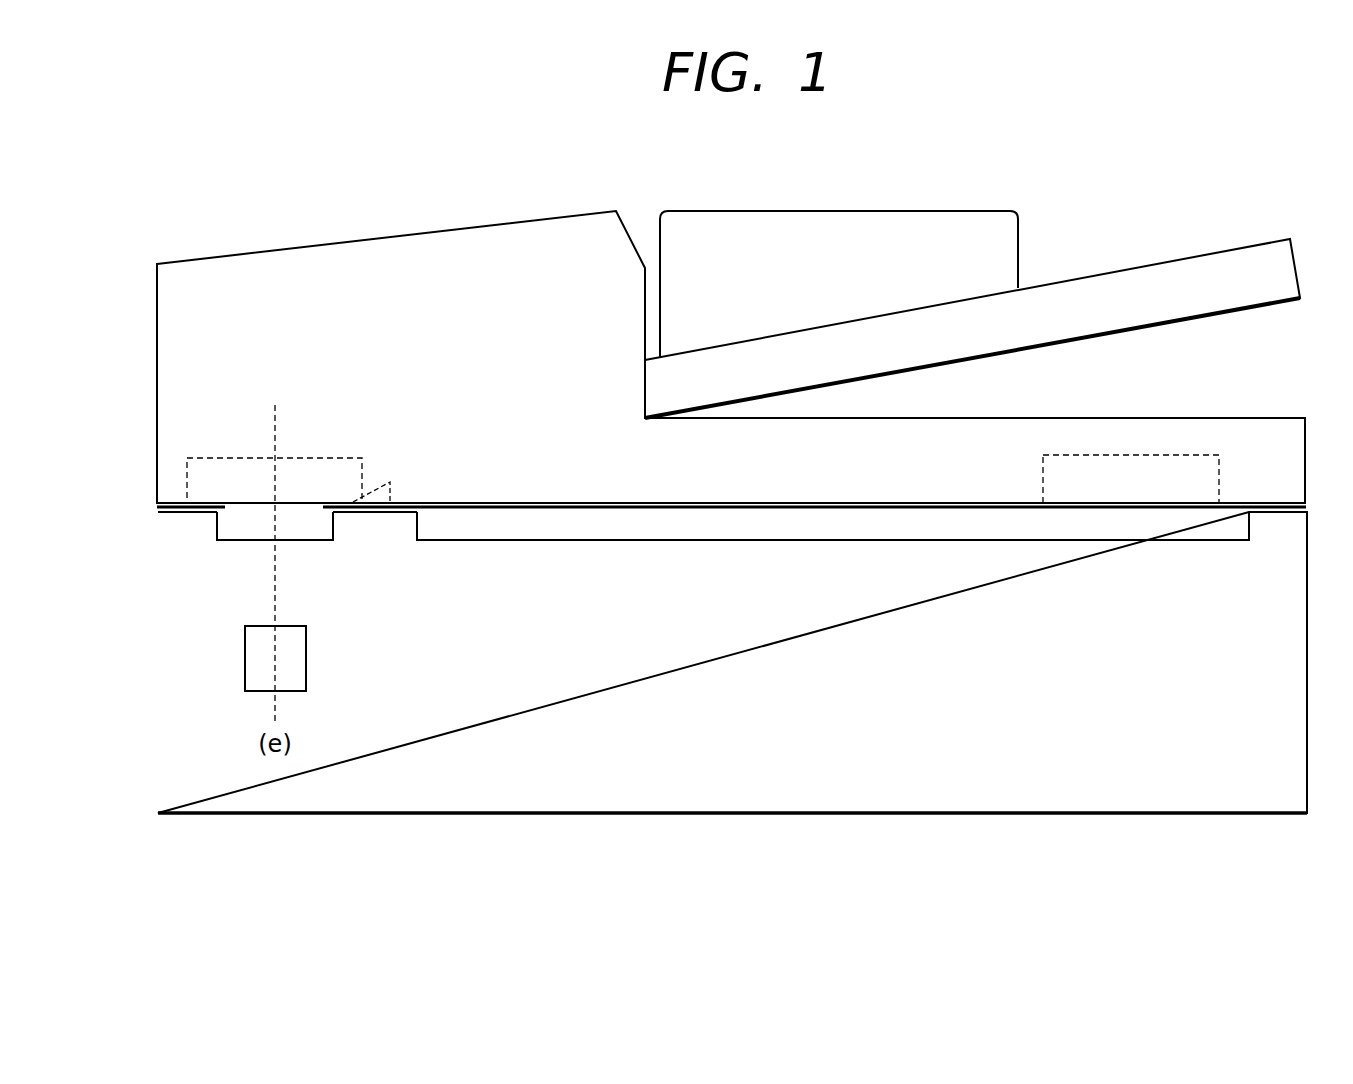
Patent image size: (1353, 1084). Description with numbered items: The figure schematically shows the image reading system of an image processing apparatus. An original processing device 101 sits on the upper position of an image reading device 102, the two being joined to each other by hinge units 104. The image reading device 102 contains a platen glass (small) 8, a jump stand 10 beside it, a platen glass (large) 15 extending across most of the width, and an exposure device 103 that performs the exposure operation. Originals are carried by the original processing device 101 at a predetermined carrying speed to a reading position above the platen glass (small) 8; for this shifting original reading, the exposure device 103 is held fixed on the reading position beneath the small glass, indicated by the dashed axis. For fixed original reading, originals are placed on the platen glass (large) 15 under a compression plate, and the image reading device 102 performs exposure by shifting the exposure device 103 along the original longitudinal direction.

The original processing device 101 is at (250, 253).
The image reading device 102 is at (273, 815).
The platen glass (small) 8 is at (243, 542).
The jump stand 10 is at (375, 512).
The platen glass (large) 15 is at (712, 540).
The exposure device 103 is at (306, 653).
The hinge units 104 is at (327, 465).